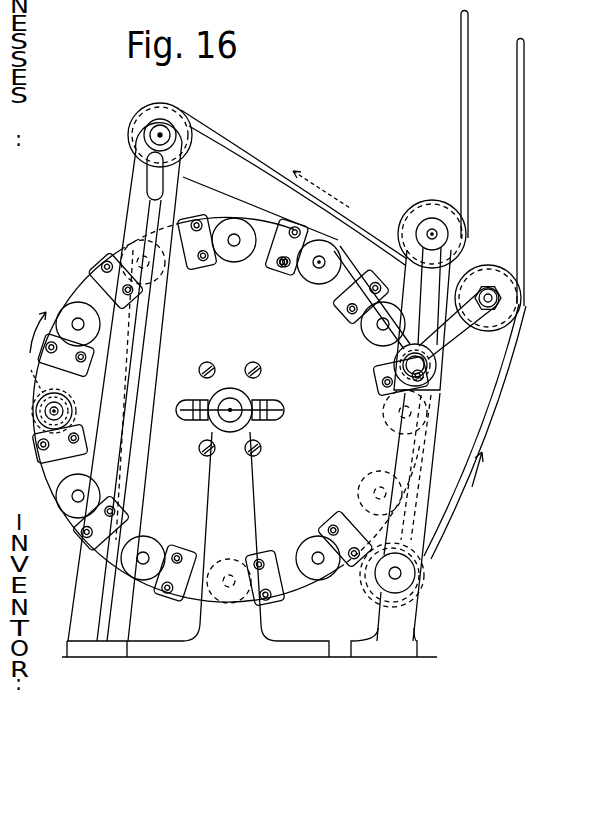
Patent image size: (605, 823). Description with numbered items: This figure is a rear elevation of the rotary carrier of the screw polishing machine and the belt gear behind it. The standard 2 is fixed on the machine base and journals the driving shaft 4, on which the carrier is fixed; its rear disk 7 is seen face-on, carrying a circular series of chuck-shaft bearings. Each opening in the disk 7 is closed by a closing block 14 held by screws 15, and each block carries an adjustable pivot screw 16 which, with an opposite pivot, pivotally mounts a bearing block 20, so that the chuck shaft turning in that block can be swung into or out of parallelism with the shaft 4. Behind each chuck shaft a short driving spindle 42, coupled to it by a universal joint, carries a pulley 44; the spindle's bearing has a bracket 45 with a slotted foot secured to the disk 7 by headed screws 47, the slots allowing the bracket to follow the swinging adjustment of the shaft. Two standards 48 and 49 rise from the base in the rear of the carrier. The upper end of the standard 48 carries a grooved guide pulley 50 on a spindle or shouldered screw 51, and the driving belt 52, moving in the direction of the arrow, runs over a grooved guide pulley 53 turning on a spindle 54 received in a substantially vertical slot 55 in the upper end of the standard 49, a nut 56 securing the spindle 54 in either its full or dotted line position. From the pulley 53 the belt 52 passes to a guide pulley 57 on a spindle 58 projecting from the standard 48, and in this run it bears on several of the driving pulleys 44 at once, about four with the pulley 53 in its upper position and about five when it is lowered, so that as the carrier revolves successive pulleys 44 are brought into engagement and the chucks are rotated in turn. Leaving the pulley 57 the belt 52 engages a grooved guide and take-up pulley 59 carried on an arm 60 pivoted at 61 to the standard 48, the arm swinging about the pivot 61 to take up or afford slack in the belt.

The standard 2 is at (230, 536).
The shaft 4 is at (231, 405).
The disk 7 is at (131, 382).
The closing block 14 is at (76, 301).
The screws 15 is at (38, 387).
The adjustable pivot screw 16 is at (35, 412).
The bearing block 20 is at (47, 409).
The driving spindle 42 is at (326, 261).
The pulley 44 is at (335, 268).
The bracket 45 is at (282, 267).
The headed screws 47 is at (295, 234).
The standard 48 is at (426, 514).
The standard 49 is at (84, 568).
The grooved guide pulley 50 is at (446, 282).
The spindle or shouldered screw 51 is at (435, 233).
The driving belt 52 is at (461, 116).
The grooved guide pulley 53 is at (190, 131).
The spindle 54 is at (173, 122).
The slot 55 is at (176, 172).
The nut 56 is at (161, 128).
The guide pulley 57 is at (418, 577).
The spindle 58 is at (399, 572).
The grooved guide and take-up pulley 59 is at (508, 283).
The arm 60 is at (459, 323).
The pivot 61 is at (428, 366).